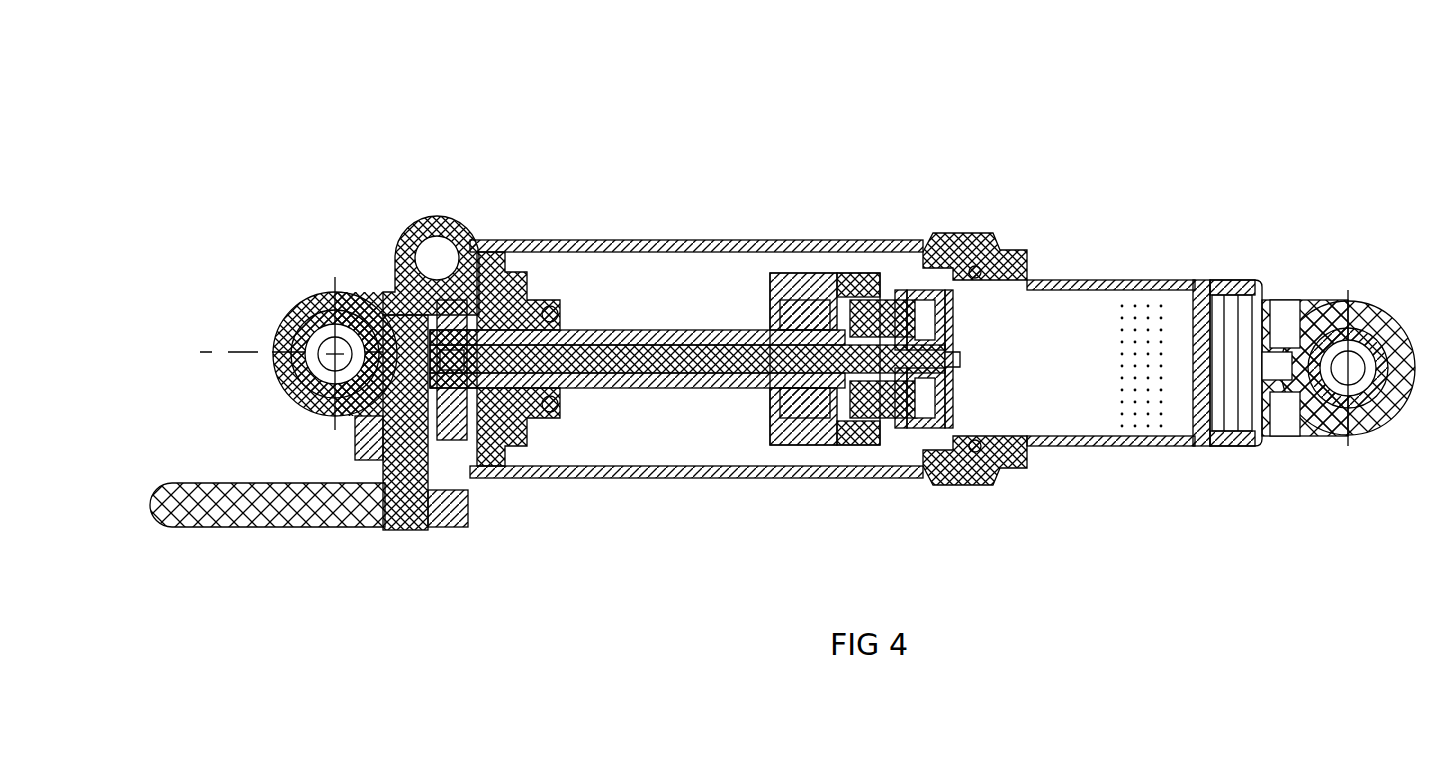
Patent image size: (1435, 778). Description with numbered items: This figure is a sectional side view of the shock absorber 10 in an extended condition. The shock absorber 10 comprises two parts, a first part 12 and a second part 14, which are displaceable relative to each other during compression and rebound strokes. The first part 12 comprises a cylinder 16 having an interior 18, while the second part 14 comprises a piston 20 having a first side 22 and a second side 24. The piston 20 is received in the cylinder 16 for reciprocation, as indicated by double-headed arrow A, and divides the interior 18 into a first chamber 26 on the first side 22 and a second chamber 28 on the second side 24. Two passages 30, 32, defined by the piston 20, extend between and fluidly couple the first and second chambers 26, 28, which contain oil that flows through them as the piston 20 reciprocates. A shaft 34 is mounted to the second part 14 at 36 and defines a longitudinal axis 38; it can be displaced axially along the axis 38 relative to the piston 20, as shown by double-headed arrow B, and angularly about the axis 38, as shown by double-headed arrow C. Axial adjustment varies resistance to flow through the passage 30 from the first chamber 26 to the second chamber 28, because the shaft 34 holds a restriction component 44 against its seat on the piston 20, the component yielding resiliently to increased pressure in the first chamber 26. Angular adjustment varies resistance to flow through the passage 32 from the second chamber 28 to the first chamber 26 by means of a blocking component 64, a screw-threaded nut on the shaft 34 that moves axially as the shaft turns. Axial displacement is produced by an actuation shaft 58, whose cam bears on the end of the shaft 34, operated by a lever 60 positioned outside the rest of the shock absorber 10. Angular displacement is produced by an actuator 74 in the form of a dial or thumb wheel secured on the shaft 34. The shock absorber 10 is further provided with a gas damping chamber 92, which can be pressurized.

The shock absorber 10 is at (958, 108).
The first part 12 is at (1180, 246).
The second part 14 is at (626, 202).
The cylinder 16 is at (1198, 290).
The interior 18 is at (993, 317).
The piston 20 is at (883, 297).
The first side 22 is at (958, 354).
The second side 24 is at (838, 408).
The first chamber 26 is at (1037, 327).
The second chamber 28 is at (882, 428).
The passage 30 is at (965, 380).
The passage 32 is at (912, 465).
The shaft 34 is at (728, 372).
The shaft mounting 36 is at (525, 302).
The longitudinal axis 38 is at (643, 360).
The restriction component 44 is at (950, 450).
The actuation shaft 58 is at (418, 290).
The lever 60 is at (184, 530).
The blocking component 64 is at (893, 327).
The actuator 74 is at (458, 318).
The gas damping chamber 92 is at (702, 298).
The double-headed arrow A is at (995, 353).
The double-headed arrow B is at (97, 352).
The double-headed arrow C is at (250, 333).